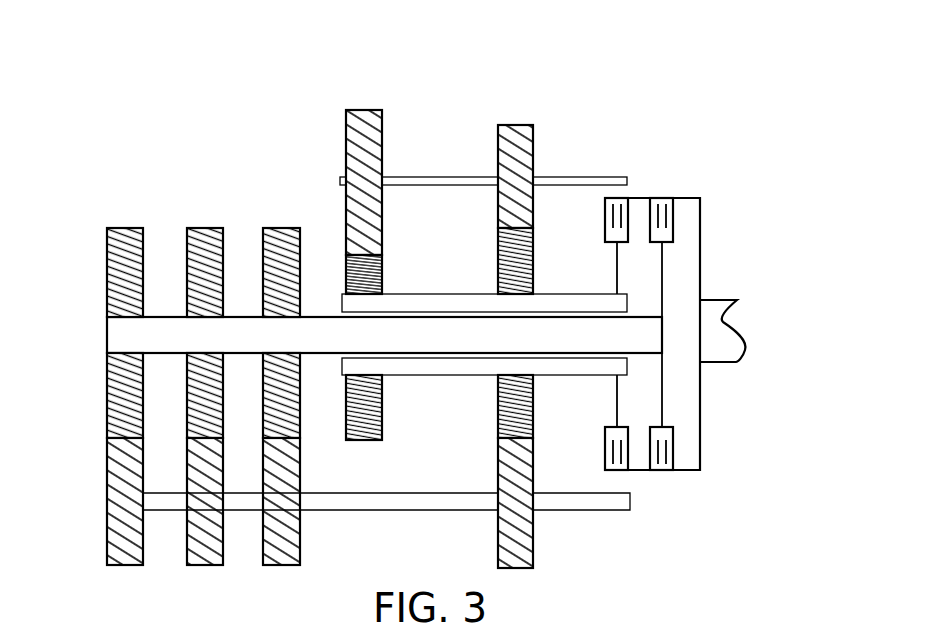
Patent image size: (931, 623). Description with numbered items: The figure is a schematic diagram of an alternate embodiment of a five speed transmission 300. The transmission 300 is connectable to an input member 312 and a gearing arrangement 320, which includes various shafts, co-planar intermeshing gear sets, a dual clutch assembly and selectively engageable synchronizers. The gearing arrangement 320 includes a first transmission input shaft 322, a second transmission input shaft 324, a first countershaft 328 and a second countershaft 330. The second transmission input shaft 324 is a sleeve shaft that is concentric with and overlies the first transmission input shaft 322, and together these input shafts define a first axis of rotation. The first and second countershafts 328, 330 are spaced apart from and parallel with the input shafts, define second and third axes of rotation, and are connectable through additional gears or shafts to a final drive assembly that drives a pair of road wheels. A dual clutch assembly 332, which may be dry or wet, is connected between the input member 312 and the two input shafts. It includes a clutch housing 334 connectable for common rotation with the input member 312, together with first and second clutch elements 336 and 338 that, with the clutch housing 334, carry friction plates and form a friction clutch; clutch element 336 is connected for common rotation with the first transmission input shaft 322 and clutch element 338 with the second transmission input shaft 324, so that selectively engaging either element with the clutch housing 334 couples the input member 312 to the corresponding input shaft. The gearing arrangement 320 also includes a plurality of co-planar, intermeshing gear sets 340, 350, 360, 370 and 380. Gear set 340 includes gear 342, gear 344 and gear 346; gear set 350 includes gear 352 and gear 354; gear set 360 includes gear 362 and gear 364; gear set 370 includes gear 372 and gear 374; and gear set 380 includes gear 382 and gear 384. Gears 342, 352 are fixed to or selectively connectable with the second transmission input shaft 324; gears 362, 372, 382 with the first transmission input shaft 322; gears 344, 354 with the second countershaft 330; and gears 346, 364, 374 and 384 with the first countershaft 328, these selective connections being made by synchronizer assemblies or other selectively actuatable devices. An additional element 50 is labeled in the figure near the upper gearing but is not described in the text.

The multiple speed transmission 300 is at (556, 146).
The gear assembly 50 is at (441, 158).
The input member 312 is at (718, 365).
The gearing arrangement 320 is at (226, 152).
The first transmission input shaft 322 is at (107, 335).
The second transmission input shaft 324 is at (418, 292).
The first countershaft 328 is at (391, 512).
The second countershaft 330 is at (554, 190).
The dual clutch assembly 332 is at (653, 328).
The clutch housing 334 is at (697, 472).
The first clutch element 336 is at (662, 290).
The second clutch element 338 is at (617, 402).
The co-planar gear set 340 is at (489, 471).
The gear 342 is at (498, 238).
The gear 344 is at (498, 130).
The gear 346 is at (498, 520).
The co-planar gear set 350 is at (400, 430).
The gear 352 is at (382, 410).
The gear 354 is at (346, 210).
The co-planar gear set 360 is at (284, 365).
The gear 362 is at (263, 255).
The gear 364 is at (300, 527).
The co-planar gear set 370 is at (188, 364).
The gear 372 is at (187, 255).
The gear 374 is at (187, 527).
The co-planar gear set 380 is at (103, 361).
The gear 382 is at (107, 255).
The gear 384 is at (107, 490).